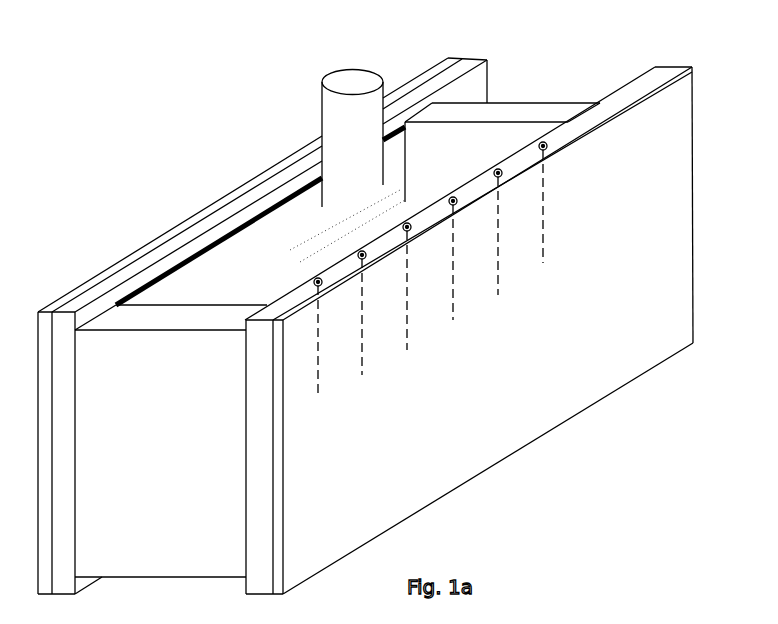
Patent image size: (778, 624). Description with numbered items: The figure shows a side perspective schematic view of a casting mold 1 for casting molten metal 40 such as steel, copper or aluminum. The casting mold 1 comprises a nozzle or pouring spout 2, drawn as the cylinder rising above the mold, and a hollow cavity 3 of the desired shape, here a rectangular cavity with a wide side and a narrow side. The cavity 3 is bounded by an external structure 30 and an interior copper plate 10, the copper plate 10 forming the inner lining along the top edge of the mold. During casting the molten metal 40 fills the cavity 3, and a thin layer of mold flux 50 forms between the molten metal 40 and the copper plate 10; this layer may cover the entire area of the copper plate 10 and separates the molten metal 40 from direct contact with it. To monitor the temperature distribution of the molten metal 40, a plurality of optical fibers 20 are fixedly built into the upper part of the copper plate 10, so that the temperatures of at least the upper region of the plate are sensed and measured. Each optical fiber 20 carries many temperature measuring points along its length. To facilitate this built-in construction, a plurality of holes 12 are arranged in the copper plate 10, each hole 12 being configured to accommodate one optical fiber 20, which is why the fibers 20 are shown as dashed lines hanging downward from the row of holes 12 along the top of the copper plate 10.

The casting mold 1 is at (526, 58).
The pouring spout 2 is at (322, 120).
The hollow cavity 3 is at (447, 145).
The interior copper plate 10 is at (463, 68).
The holes 12 is at (546, 152).
The optical fibers 20 is at (457, 205).
The external structure 30 is at (680, 145).
The molten metal 40 is at (405, 191).
The mold flux 50 is at (267, 200).